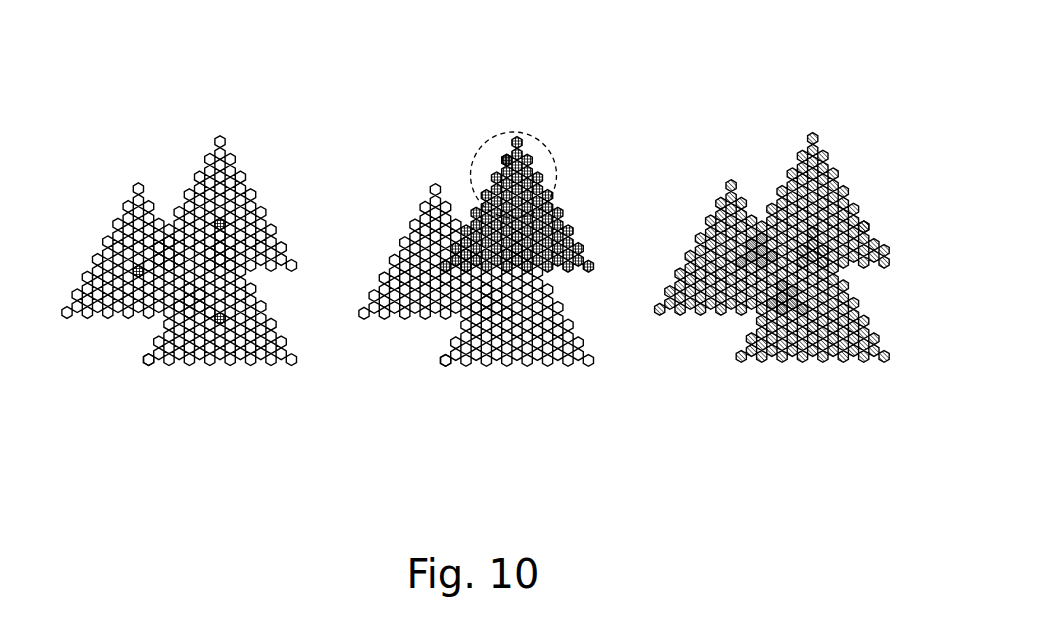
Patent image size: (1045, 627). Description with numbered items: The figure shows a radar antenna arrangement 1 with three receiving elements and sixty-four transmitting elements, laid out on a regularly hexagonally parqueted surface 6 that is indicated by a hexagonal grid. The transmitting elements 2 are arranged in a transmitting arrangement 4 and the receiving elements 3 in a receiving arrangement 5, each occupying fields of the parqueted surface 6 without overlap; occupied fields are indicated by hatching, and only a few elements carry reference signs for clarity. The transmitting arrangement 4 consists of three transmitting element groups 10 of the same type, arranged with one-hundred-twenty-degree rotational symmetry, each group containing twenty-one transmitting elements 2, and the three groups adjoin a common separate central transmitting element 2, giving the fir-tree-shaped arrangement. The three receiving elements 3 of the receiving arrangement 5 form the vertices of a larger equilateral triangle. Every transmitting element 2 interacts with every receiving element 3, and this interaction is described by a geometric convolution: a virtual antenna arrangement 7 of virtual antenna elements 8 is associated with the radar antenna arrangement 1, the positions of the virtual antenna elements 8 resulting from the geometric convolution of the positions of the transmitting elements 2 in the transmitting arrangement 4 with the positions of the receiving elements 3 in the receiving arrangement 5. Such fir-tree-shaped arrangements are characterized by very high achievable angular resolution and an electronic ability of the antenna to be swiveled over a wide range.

The radar antenna arrangement 1 is at (341, 195).
The transmitting element 2 is at (503, 157).
The receiving element 3 is at (134, 269).
The transmitting arrangement 4 is at (580, 120).
The receiving arrangement 5 is at (128, 116).
The hexagonally parqueted surface 6 is at (146, 364).
The virtual antenna arrangement 7 is at (831, 114).
The virtual antenna element 8 is at (887, 245).
The transmitting element group 10 is at (514, 131).